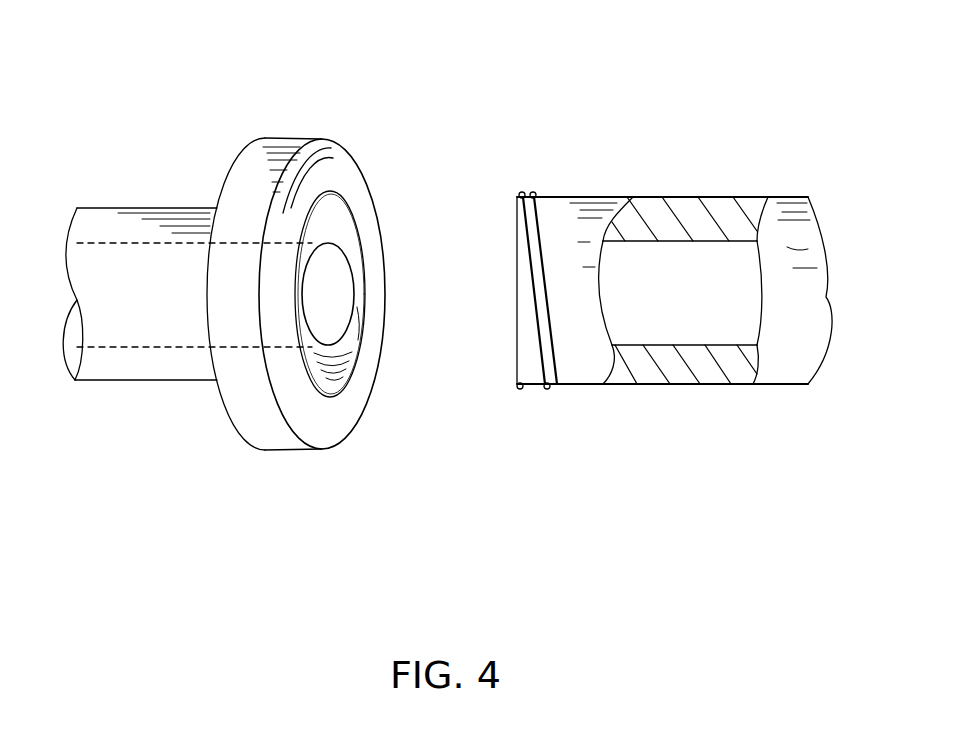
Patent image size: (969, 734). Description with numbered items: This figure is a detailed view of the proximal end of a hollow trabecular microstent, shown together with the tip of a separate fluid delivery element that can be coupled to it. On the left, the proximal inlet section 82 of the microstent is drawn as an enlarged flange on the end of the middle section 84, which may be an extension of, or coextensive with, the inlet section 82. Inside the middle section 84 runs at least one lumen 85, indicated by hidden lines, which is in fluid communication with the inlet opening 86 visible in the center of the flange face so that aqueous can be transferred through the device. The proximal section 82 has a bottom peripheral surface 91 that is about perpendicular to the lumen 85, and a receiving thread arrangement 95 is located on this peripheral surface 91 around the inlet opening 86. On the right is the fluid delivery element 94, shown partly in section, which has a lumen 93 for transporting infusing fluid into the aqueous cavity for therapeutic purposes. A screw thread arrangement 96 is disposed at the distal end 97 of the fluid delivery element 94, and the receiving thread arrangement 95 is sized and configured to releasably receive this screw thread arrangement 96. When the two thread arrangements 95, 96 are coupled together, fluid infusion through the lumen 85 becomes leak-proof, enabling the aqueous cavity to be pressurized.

The inlet section 82 is at (283, 137).
The middle section 84 is at (123, 208).
The lumen 85 is at (155, 328).
The inlet opening 86 is at (330, 258).
The bottom peripheral surface 91 is at (337, 158).
The lumen of fluid delivery element 93 is at (698, 252).
The fluid delivery element 94 is at (663, 197).
The receiving thread arrangement 95 is at (343, 387).
The screw thread arrangement 96 is at (532, 388).
The distal end 97 is at (515, 193).